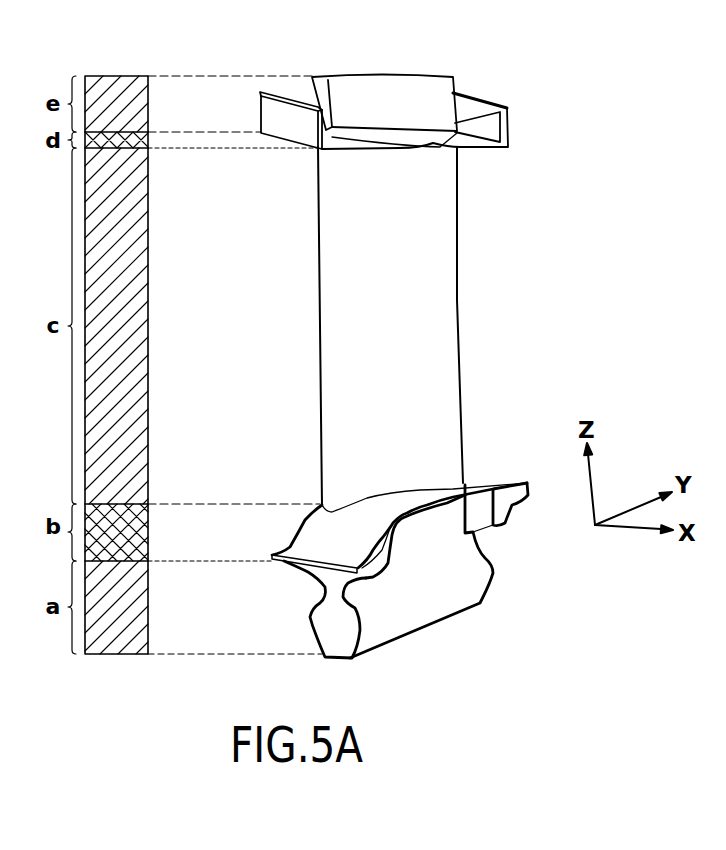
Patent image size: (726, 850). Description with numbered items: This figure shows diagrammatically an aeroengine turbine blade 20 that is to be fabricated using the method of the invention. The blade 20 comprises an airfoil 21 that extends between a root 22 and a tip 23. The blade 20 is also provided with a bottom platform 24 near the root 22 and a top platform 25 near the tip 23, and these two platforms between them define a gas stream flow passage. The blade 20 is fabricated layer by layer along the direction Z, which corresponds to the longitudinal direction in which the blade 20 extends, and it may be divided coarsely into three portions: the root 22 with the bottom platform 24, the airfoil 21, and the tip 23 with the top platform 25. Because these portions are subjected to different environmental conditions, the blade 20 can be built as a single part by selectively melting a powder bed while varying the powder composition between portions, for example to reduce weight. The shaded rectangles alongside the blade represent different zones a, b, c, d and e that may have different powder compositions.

The blade 20 is at (437, 342).
The airfoil 21 is at (438, 308).
The root 22 is at (470, 573).
The tip 23 is at (392, 86).
The bottom platform 24 is at (312, 532).
The top platform 25 is at (477, 110).